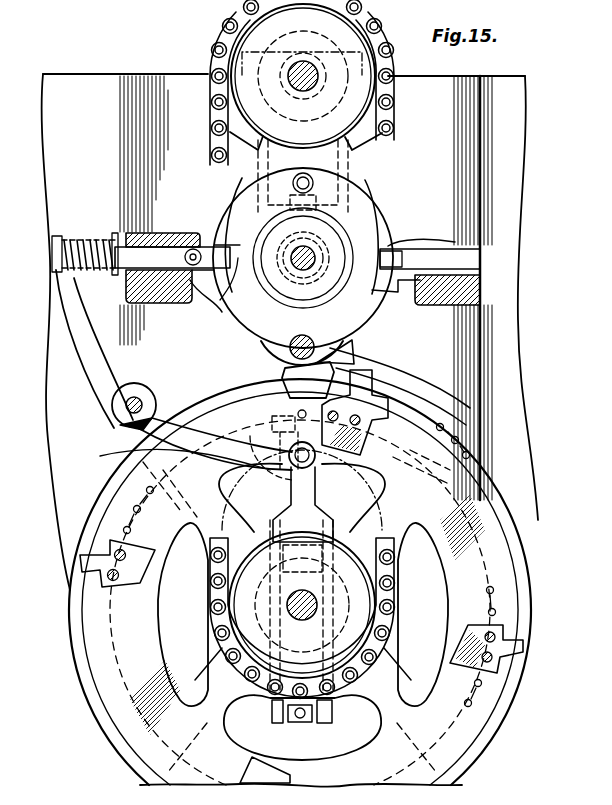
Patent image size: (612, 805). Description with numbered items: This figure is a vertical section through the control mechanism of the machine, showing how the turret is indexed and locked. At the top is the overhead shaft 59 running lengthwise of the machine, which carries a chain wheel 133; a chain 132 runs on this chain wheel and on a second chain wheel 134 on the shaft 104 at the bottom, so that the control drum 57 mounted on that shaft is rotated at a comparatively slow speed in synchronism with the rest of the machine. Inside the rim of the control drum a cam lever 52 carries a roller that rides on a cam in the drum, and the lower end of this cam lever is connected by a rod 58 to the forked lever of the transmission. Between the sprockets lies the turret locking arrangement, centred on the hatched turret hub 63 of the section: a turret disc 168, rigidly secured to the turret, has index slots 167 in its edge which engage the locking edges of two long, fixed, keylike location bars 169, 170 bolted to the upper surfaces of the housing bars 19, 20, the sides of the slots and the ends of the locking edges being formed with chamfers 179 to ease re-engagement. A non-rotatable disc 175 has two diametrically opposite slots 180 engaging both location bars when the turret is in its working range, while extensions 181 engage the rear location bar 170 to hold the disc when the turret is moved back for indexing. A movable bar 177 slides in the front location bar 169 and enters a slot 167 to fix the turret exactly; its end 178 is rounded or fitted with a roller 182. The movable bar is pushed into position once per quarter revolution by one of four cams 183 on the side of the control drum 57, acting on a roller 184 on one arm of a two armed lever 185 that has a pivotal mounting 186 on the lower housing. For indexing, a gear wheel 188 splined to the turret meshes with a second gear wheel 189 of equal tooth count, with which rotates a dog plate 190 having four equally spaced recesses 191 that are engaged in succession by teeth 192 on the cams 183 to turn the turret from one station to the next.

The overhead shaft 59 is at (290, 72).
The chain wheel 133 is at (226, 135).
The front location bar 169 is at (150, 235).
The turret disc 168 is at (245, 200).
The chamfers 179 is at (236, 238).
The end of movable bar 178 is at (193, 257).
The non-rotatable disc 175 is at (370, 205).
The hub 63 is at (352, 230).
The slots 180 is at (378, 250).
The extensions 181 is at (455, 242).
The rear location bar 170 is at (465, 262).
The bar 20 is at (478, 298).
The movable bar 177 is at (128, 275).
The bar 19 is at (115, 315).
The roller 182 is at (200, 290).
The index slots 167 is at (220, 308).
The gear wheel 188 is at (350, 340).
The second gear wheel 189 is at (356, 356).
The dog plate 190 is at (410, 378).
The recesses 191 is at (262, 380).
The pivotal mounting 186 is at (138, 402).
The two armed lever 185 is at (124, 456).
The roller 184 is at (265, 446).
The cam lever 52 is at (318, 482).
The chain wheel 134 is at (250, 528).
The chain 132 is at (212, 600).
The shaft 104 is at (318, 605).
The control drum 57 is at (78, 650).
The rod 58 is at (302, 722).
The teeth 192 is at (372, 412).
The cams 183 is at (360, 450).